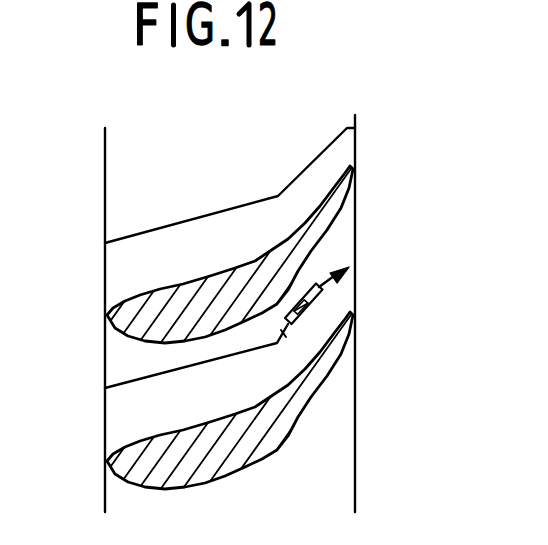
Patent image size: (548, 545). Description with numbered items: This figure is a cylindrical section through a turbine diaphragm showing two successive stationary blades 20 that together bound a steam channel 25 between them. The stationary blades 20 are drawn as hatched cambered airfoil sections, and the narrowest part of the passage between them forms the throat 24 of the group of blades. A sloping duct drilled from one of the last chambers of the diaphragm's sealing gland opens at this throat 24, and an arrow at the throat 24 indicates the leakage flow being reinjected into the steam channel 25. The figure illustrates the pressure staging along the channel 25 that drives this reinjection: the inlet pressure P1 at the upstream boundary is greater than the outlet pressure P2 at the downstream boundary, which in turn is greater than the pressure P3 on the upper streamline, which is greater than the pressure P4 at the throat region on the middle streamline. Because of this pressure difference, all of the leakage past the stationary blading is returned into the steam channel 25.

The stationary blade 20 is at (181, 306).
The steam channel 25 is at (130, 424).
The throat 24 is at (309, 311).
The pressure P1 is at (116, 372).
The pressure P2 is at (420, 396).
The pressure P3 is at (222, 275).
The pressure P4 is at (286, 328).